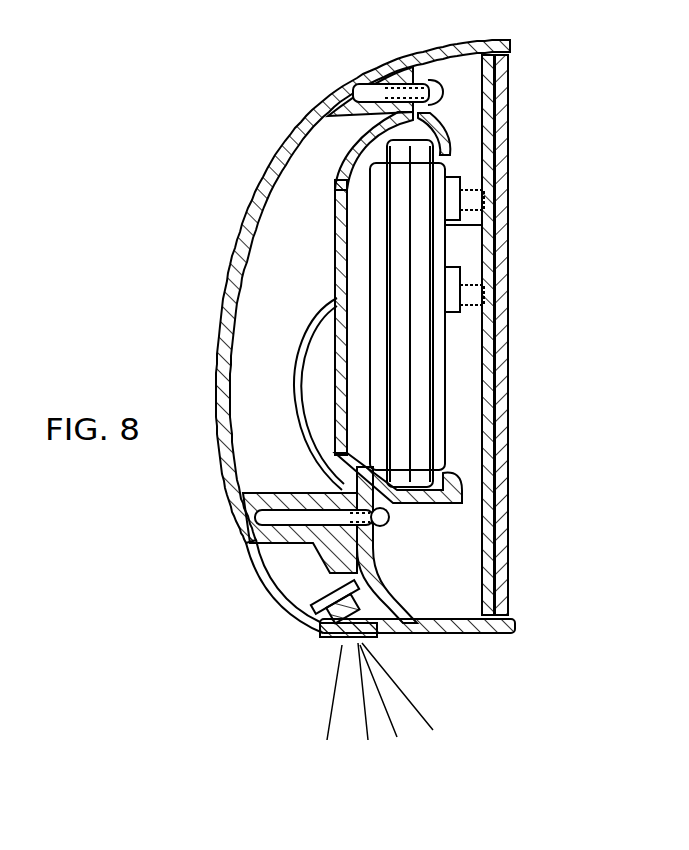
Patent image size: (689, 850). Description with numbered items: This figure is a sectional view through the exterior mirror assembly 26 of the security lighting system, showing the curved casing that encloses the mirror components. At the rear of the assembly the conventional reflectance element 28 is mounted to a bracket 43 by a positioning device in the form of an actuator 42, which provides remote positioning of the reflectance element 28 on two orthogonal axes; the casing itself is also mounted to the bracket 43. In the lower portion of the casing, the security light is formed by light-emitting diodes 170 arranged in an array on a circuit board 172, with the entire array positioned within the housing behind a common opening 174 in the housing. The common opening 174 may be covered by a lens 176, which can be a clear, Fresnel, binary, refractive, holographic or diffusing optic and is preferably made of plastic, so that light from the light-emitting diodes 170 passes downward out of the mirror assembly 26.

The exterior mirror assembly 26 is at (508, 40).
The reflectance element 28 is at (509, 107).
The actuator 42 is at (447, 247).
The bracket 43 is at (333, 200).
The light-emitting diodes 170 is at (368, 604).
The circuit board 172 is at (318, 600).
The common opening 174 is at (378, 642).
The lens 176 is at (332, 641).